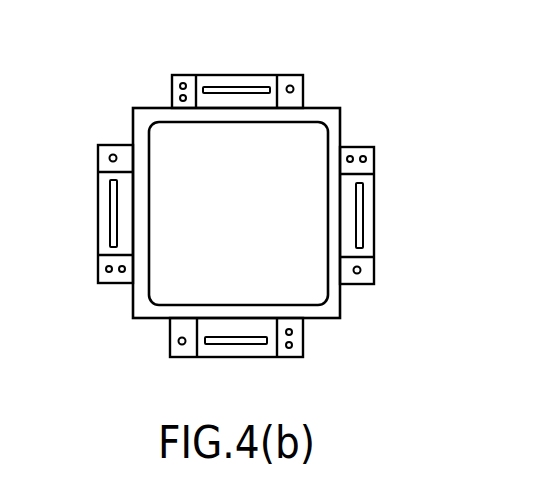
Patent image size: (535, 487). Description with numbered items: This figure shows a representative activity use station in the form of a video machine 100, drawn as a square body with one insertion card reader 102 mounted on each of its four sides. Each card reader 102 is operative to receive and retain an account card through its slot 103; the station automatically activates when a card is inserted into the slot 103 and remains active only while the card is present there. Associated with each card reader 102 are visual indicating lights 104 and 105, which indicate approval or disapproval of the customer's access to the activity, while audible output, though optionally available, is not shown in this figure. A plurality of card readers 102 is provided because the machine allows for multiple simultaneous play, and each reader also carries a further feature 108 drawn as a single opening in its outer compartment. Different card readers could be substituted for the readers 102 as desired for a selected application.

The video machine 100 is at (253, 223).
The insertion card reader 102 is at (223, 77).
The slot 103 is at (258, 90).
The visual indicating light 104 is at (181, 84).
The visual indicating light 105 is at (181, 97).
The hole 108 is at (420, 243).